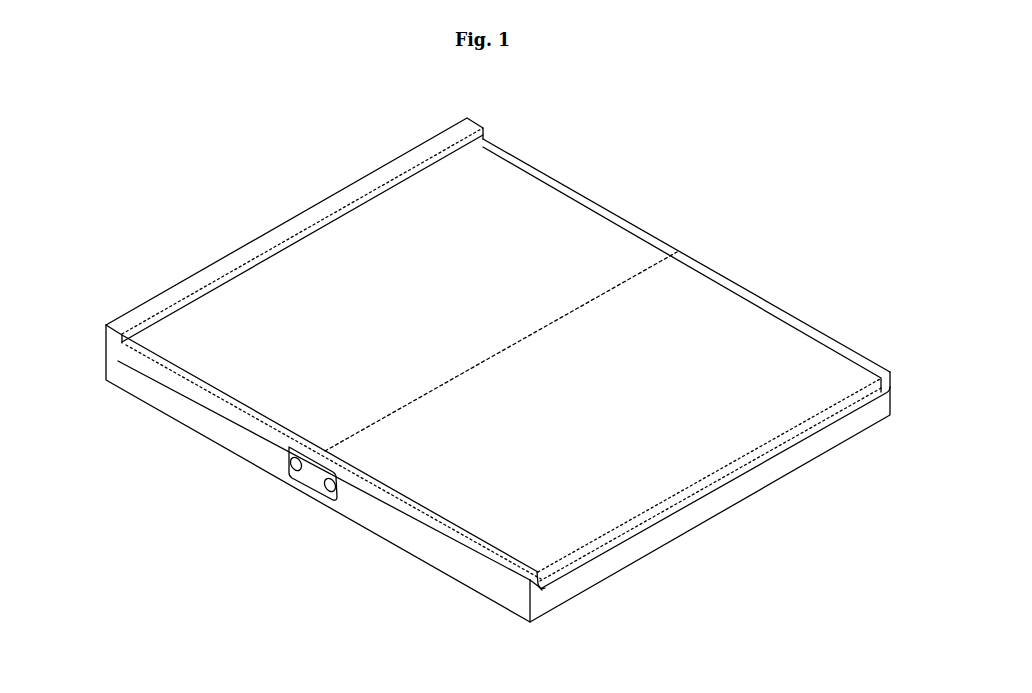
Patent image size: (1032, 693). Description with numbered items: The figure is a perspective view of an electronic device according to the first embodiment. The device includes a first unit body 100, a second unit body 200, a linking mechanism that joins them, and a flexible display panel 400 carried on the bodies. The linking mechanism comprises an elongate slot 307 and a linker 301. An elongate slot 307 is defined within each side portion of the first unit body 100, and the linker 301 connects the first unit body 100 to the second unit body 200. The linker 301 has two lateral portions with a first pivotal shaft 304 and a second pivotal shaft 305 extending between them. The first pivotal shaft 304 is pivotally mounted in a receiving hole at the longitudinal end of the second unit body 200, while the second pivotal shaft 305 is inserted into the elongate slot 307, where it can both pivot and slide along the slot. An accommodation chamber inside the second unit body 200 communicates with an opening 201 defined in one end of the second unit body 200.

The first unit body 100 is at (194, 425).
The second unit body 200 is at (484, 596).
The opening 201 is at (606, 560).
The linker 301 is at (296, 471).
The first pivotal shaft 304 is at (331, 492).
The second pivotal shaft 305 is at (288, 513).
The elongate slot 307 is at (133, 374).
The flexible display panel 400 is at (788, 330).